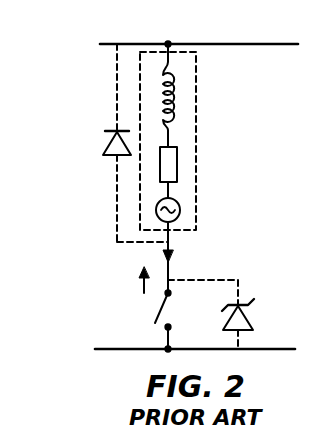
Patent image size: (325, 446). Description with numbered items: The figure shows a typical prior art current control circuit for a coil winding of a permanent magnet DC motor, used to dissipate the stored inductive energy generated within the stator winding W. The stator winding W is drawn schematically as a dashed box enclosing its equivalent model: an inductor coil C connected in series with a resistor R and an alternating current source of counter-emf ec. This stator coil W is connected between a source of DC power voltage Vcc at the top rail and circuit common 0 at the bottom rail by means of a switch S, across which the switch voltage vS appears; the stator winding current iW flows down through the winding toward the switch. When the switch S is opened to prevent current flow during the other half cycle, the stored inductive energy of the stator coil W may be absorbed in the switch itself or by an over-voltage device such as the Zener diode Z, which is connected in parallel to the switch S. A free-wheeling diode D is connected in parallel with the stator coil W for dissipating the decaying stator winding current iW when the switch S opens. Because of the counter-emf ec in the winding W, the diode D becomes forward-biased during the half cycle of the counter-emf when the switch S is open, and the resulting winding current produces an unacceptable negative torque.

The source of DC power voltage Vcc is at (176, 38).
The circuit common 0 is at (184, 348).
The free-wheeling diode D is at (105, 137).
The stator winding W is at (198, 140).
The inductor coil C is at (176, 100).
The resistor R is at (177, 165).
The counter-emf source ec is at (180, 210).
The stator winding current iW is at (187, 257).
The switch voltage vS is at (120, 275).
The switch S is at (158, 312).
The Zener diode Z is at (253, 331).